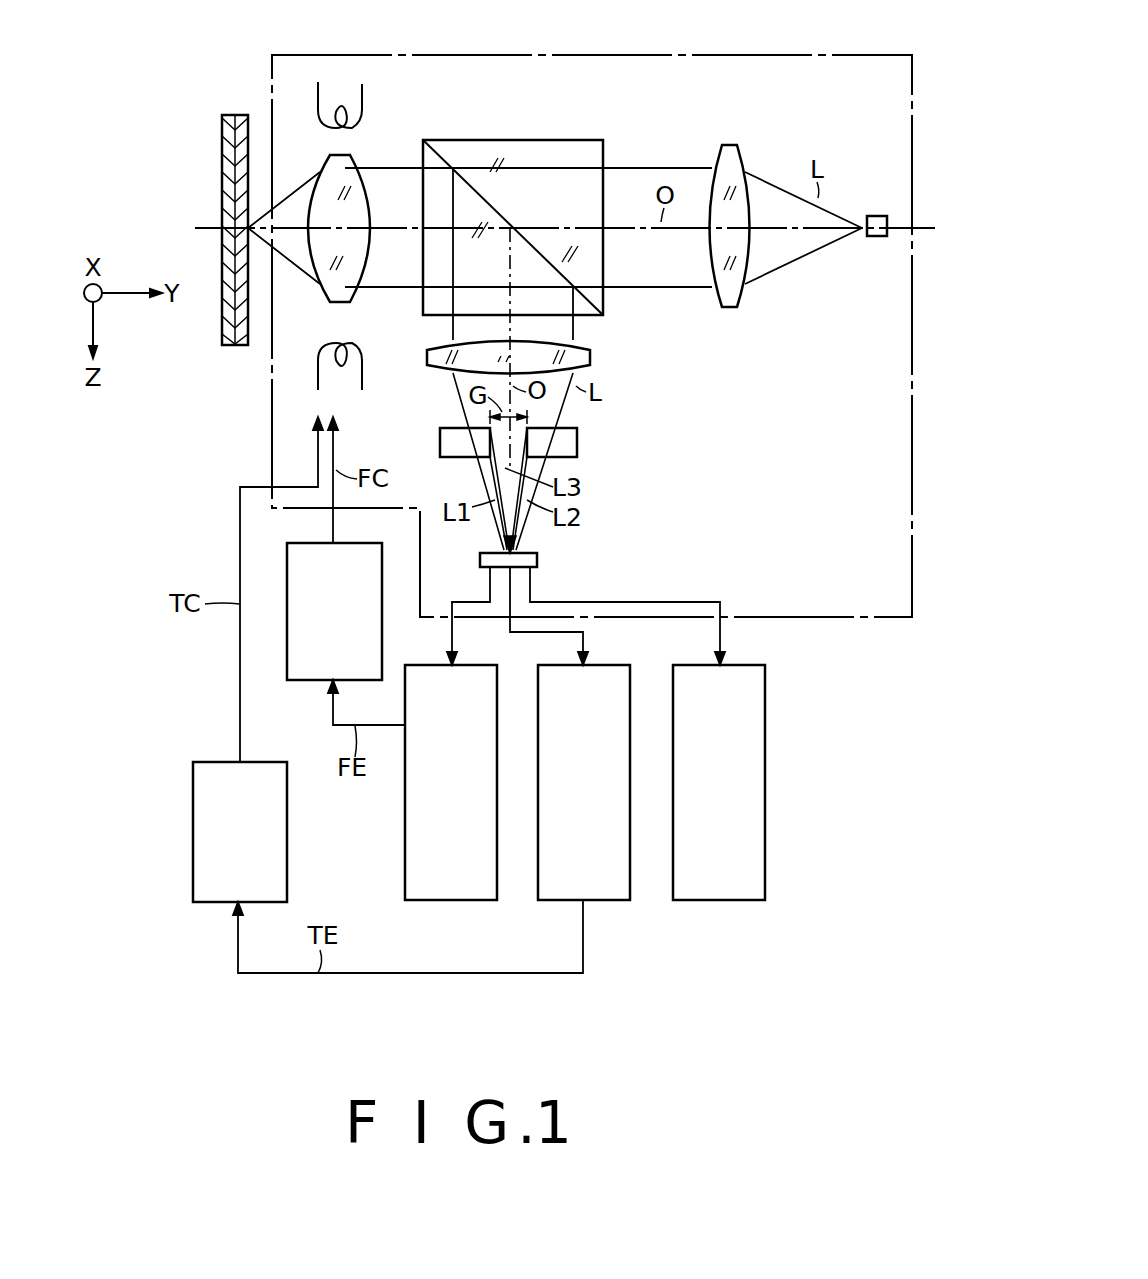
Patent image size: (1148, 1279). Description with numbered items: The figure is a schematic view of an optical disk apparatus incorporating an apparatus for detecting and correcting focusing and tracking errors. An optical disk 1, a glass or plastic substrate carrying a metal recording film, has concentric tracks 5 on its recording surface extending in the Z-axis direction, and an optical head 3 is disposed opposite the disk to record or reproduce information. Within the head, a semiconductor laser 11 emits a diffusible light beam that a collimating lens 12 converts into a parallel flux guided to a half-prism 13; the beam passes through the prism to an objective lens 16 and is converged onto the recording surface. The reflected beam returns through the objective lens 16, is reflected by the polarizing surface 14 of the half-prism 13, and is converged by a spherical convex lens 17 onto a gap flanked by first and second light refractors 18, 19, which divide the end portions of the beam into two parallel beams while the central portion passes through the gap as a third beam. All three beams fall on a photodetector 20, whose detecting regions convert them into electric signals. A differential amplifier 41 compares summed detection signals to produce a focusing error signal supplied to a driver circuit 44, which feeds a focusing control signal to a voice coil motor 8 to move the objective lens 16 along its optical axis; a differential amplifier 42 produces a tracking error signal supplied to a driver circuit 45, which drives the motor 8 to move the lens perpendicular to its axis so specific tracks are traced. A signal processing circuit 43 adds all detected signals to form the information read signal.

The optical disk 1 is at (226, 118).
The optical head 3 is at (805, 55).
The tracks 5 is at (240, 118).
The voice coil motor 8 is at (362, 86).
The semiconductor laser 11 is at (874, 214).
The collimating lens 12 is at (746, 160).
The half-prism 13 is at (556, 140).
The polarizing surface 14 is at (434, 150).
The objective lens 16 is at (352, 162).
The spherical convex lens 17 is at (590, 356).
The first light refractor 18 is at (440, 446).
The second light refractor 19 is at (577, 446).
The photodetector 20 is at (537, 560).
The differential amplifier 41 is at (447, 900).
The differential amplifier 42 is at (618, 900).
The signal processing circuit 43 is at (727, 900).
The driver circuit 44 is at (293, 680).
The driver circuit 45 is at (193, 836).